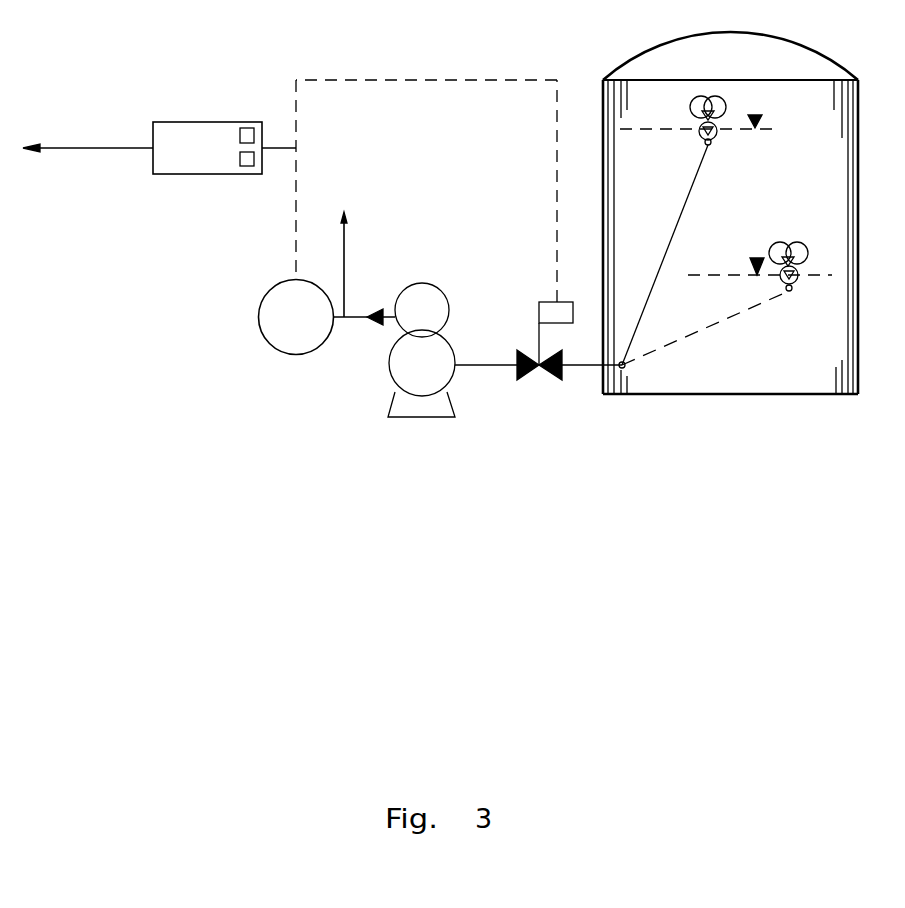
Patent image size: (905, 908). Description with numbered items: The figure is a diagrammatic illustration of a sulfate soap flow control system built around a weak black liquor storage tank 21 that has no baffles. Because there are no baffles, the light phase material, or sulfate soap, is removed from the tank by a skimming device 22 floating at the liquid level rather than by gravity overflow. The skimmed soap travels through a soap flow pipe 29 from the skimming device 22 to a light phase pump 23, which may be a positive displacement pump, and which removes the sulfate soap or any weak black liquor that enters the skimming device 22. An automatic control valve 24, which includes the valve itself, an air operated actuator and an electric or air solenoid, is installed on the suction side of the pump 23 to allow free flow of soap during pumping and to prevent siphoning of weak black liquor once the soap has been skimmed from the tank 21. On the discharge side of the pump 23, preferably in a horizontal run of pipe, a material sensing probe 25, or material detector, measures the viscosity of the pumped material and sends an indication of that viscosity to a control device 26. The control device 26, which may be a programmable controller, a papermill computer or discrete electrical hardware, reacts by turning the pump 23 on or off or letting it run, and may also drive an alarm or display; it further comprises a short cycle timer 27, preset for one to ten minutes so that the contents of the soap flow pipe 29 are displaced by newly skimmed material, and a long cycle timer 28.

The storage tank 21 is at (815, 48).
The skimming device 22 is at (722, 102).
The light phase pump 23 is at (448, 300).
The automatic control valve 24 is at (517, 352).
The material sensing probe 25 is at (258, 310).
The control device 26 is at (183, 122).
The short cycle timer 27 is at (254, 133).
The long cycle timer 28 is at (254, 160).
The soap flow pipe 29 is at (693, 183).